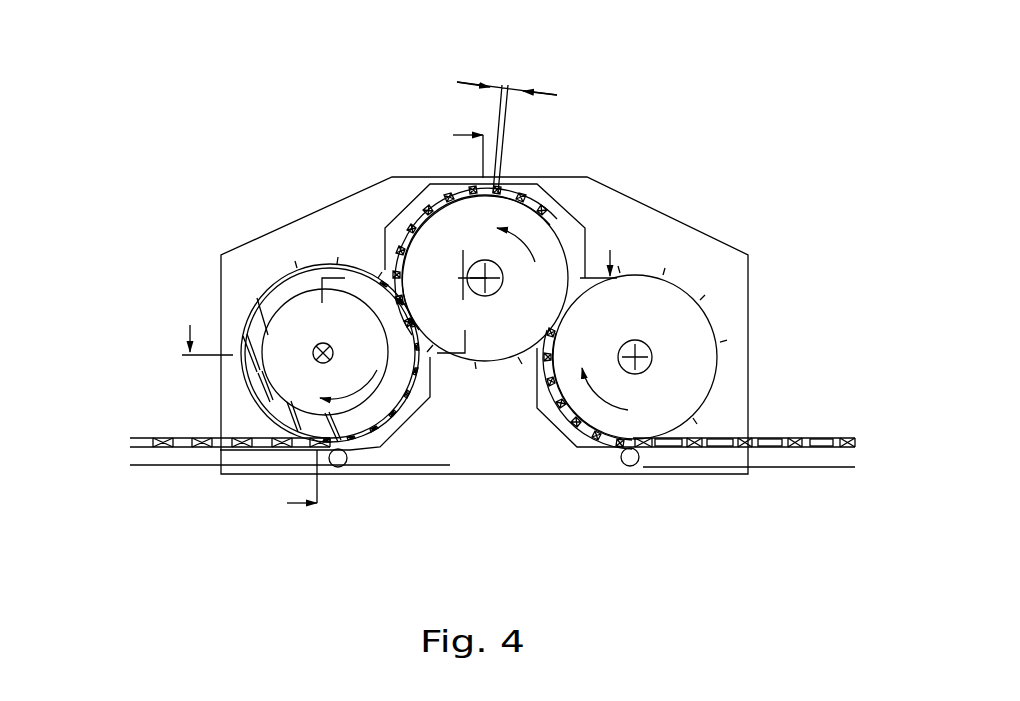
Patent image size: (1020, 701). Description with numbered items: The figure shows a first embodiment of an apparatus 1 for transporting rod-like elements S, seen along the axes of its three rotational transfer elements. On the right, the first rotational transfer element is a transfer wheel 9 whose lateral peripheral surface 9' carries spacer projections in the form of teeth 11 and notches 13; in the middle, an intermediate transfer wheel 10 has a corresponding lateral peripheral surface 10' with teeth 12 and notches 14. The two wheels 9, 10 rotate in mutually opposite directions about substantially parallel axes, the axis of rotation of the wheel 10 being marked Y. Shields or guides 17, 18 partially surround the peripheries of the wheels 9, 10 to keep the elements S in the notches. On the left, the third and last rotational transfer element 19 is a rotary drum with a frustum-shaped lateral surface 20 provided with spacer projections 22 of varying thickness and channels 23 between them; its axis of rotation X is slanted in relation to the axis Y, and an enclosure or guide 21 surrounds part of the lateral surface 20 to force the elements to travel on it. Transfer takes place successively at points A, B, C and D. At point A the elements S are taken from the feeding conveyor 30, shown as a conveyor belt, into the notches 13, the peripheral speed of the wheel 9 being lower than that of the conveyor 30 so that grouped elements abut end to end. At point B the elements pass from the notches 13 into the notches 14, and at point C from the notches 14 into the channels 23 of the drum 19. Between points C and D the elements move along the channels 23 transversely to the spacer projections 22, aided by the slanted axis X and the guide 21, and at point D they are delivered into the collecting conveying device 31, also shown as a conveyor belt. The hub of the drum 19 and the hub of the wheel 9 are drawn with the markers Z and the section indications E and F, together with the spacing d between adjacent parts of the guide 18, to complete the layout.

The apparatus housing 1 is at (357, 165).
The first rotational transfer element 9 is at (682, 357).
The lateral peripheral surface 9' is at (777, 266).
The intermediate rotational transfer element 10 is at (450, 218).
The lateral peripheral surface 10' is at (456, 449).
The teeth 11 is at (703, 297).
The teeth 12 is at (532, 208).
The notches 13 is at (683, 290).
The notches 14 is at (488, 362).
The shield 17 is at (568, 427).
The shield 18 is at (563, 217).
The rotational transfer element 19 is at (300, 333).
The lateral surface 20 is at (248, 300).
The enclosure 21 is at (420, 410).
The spacer projections 22 is at (263, 398).
The channels 23 is at (258, 373).
The feeding conveyor 30 is at (703, 447).
The collecting conveying device 31 is at (257, 453).
The point A is at (648, 455).
The point B is at (578, 277).
The point C is at (393, 288).
The point D is at (325, 455).
The section E is at (385, 320).
The section F is at (409, 303).
The elements S is at (773, 432).
The axis of rotation X is at (318, 348).
The axis of rotation Y is at (480, 274).
The axis Z is at (640, 355).
The gap d is at (507, 121).